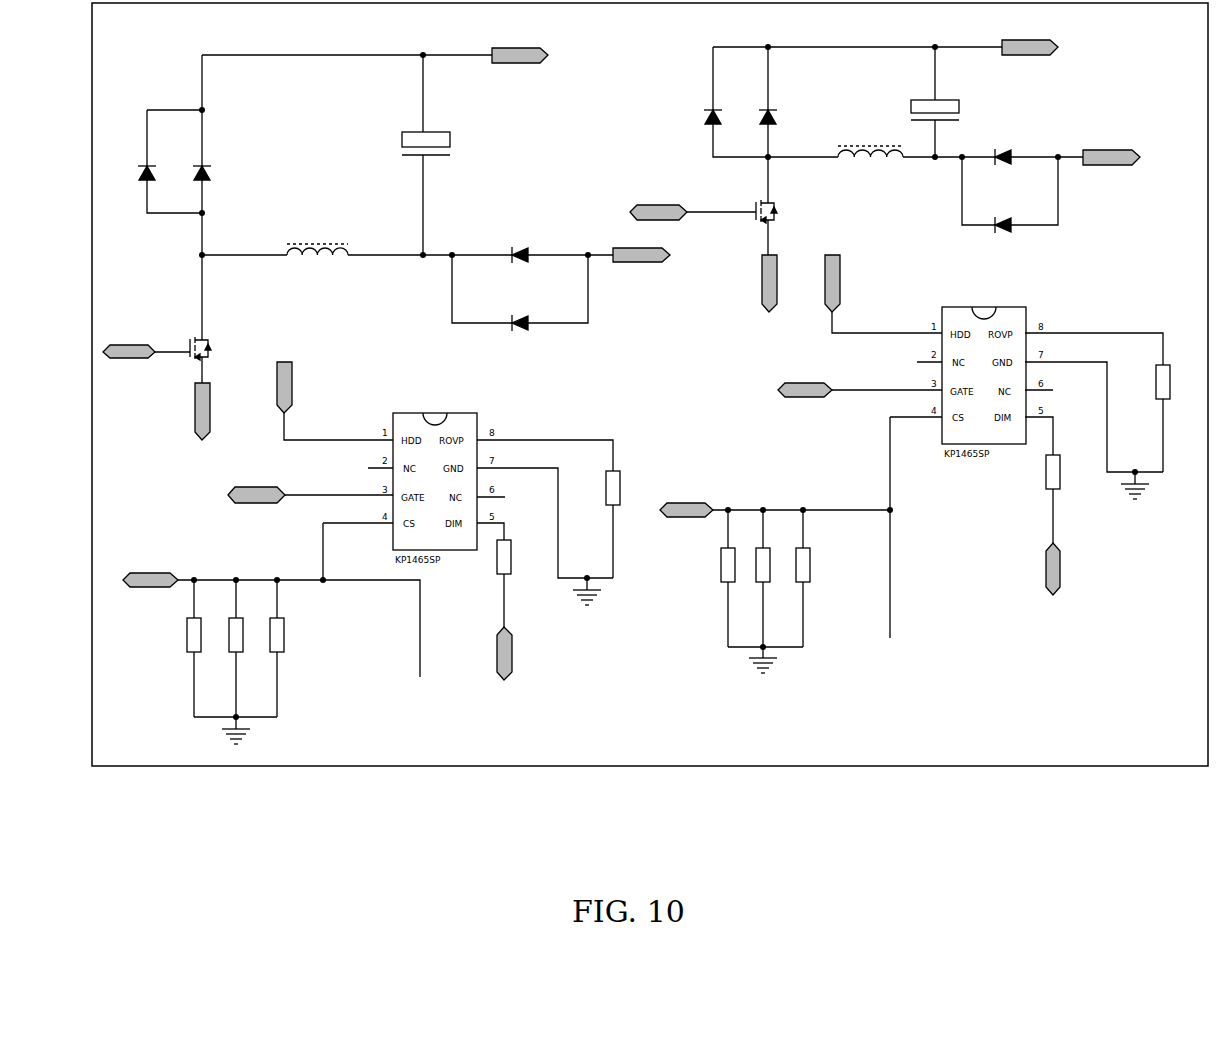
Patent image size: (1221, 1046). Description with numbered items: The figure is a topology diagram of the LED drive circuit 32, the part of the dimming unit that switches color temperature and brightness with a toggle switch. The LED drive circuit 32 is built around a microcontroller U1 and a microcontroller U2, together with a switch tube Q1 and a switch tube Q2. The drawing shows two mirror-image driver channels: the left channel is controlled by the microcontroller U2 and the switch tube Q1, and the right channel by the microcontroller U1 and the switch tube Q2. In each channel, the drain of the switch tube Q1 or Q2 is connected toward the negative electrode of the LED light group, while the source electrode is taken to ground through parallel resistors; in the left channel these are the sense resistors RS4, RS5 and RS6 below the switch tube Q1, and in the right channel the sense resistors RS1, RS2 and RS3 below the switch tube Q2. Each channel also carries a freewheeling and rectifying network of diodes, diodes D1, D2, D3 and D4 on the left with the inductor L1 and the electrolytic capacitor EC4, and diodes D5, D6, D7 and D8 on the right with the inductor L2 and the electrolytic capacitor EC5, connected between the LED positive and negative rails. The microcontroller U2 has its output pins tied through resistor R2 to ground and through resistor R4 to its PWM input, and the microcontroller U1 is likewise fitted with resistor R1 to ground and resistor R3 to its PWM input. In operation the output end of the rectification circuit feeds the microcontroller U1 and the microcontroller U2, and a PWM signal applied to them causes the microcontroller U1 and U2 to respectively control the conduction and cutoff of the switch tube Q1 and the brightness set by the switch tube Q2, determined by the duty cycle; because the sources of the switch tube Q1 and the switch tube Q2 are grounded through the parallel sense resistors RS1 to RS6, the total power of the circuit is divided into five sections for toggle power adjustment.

The LED drive circuit 32 is at (650, 423).
The microcontroller U1 is at (987, 373).
The microcontroller U2 is at (438, 479).
The switch tube Q1 is at (206, 349).
The switch tube Q2 is at (777, 212).
The diode ES2J D1 is at (150, 175).
The diode ES2J D2 is at (207, 175).
The diode ES2J D3 is at (520, 253).
The diode ES2J D4 is at (520, 321).
The diode ES2J D5 is at (716, 119).
The diode ES2J D6 is at (773, 119).
The diode ES2J D7 is at (1004, 155).
The diode ES2J D8 is at (1004, 223).
The inductor CD75/222 L1 is at (319, 242).
The inductor CD75/222 L2 is at (872, 145).
The electrolytic capacitor 4.7UF/400V EC4 is at (451, 143).
The electrolytic capacitor 4.7UF/400V EC5 is at (961, 111).
The resistor 51K R1 is at (1170, 399).
The resistor 51K R2 is at (620, 505).
The resistor 1K R3 is at (1057, 489).
The resistor 1K R4 is at (508, 575).
The sense resistor 1.6R/1206 RS1 is at (769, 589).
The sense resistor 1.5R/1206 RS2 is at (824, 584).
The sense resistor 1.6R/1206 RS3 is at (703, 584).
The sense resistor 1.6R/1206 RS4 is at (194, 654).
The sense resistor 1.6R/1206 RS5 is at (243, 659).
The sense resistor 1.5R/1206 RS6 is at (298, 654).